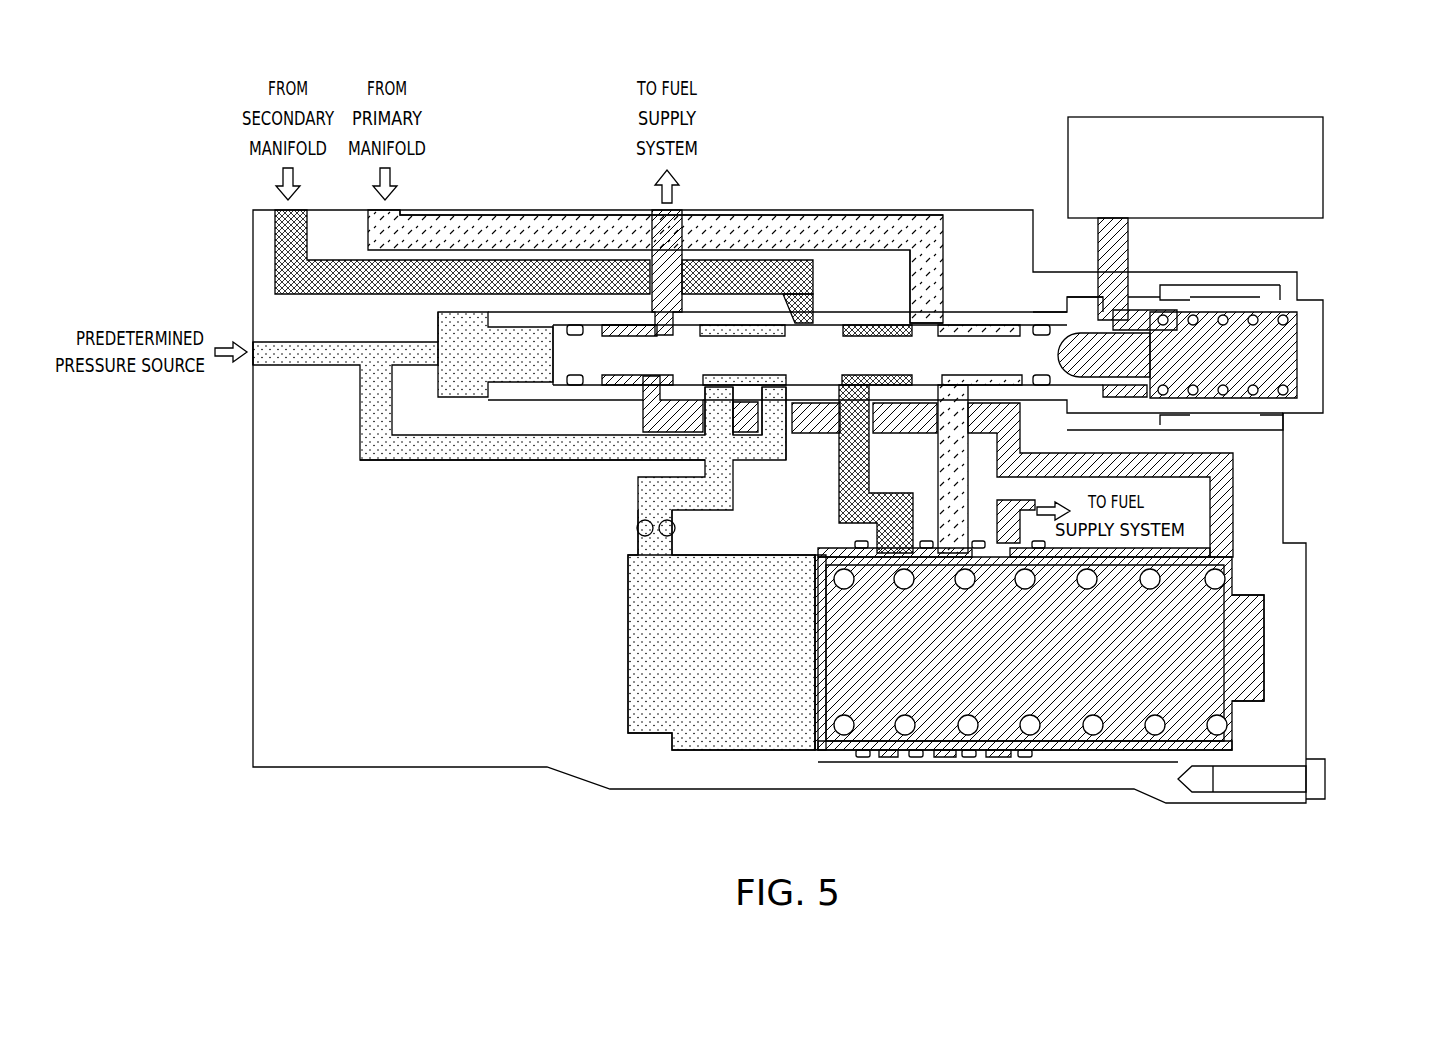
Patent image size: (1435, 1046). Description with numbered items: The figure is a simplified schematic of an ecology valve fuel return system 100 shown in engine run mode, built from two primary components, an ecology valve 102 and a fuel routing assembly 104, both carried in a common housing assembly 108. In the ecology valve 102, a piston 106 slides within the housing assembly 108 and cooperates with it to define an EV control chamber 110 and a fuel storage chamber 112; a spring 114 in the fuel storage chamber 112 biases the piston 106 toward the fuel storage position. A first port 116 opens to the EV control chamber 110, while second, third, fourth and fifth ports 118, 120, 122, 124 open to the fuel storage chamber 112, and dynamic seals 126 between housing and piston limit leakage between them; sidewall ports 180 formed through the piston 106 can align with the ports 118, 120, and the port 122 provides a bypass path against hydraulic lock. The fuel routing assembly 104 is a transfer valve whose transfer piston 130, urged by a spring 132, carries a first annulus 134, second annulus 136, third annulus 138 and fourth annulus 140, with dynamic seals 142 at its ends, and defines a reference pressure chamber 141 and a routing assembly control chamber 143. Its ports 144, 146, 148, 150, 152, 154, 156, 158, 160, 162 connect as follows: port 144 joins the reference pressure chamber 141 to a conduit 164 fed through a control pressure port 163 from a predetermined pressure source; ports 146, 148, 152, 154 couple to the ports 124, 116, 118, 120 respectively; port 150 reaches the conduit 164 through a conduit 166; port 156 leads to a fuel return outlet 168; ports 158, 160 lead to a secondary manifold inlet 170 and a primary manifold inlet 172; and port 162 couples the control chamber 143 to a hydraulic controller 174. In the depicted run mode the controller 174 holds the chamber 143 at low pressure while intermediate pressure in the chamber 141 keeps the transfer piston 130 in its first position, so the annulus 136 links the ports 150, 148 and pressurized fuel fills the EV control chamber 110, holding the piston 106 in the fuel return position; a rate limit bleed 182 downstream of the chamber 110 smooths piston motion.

The ecology valve fuel return system 100 is at (318, 822).
The ecology valve 102 is at (1288, 638).
The fuel routing assembly 104 is at (1318, 324).
The piston 106 is at (822, 646).
The housing assembly 108 is at (438, 669).
The EV control chamber 110 is at (744, 657).
The fuel storage chamber 112 is at (1084, 657).
The spring 114 is at (1210, 722).
The first port 116 is at (648, 552).
The second port 118 is at (889, 758).
The third port 120 is at (945, 758).
The fourth port 122 is at (1000, 758).
The fifth port 124 is at (1238, 556).
The dynamic seals 126 is at (862, 760).
The transfer piston 130 is at (860, 366).
The spring 132 is at (1290, 390).
The first annulus 134 is at (624, 328).
The second annulus 136 is at (748, 327).
The third annulus 138 is at (870, 326).
The fourth annulus 140 is at (990, 327).
The reference pressure chamber 141 is at (522, 366).
The dynamic seals 142 is at (575, 386).
The routing assembly control chamber 143 is at (1232, 367).
The port 144 is at (440, 348).
The port 146 is at (654, 396).
The port 148 is at (716, 392).
The port 150 is at (776, 392).
The port 152 is at (870, 388).
The port 154 is at (956, 392).
The port 156 is at (664, 320).
The port 158 is at (800, 316).
The port 160 is at (930, 312).
The port 162 is at (1118, 295).
The control pressure port 163 is at (252, 360).
The conduit 164 is at (305, 365).
The conduit 166 is at (428, 460).
The fuel return outlet 168 is at (672, 225).
The secondary manifold inlet 170 is at (283, 222).
The primary manifold inlet 172 is at (402, 208).
The hydraulic controller 174 is at (1192, 117).
The sidewall ports 180 is at (970, 567).
The rate limit bleed 182 is at (640, 528).